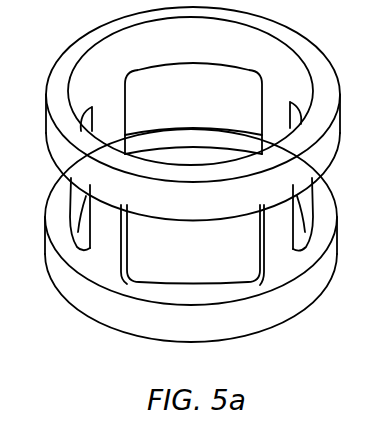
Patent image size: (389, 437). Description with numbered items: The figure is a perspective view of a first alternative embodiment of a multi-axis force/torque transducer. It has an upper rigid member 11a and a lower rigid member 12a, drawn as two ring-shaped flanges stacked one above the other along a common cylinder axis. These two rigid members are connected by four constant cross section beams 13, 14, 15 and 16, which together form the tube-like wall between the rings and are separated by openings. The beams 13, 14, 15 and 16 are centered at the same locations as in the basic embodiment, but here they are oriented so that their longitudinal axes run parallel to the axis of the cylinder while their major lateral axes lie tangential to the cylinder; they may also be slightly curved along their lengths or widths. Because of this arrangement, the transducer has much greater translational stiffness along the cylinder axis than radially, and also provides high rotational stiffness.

The upper rigid member 11a is at (120, 26).
The lower rigid member 12a is at (194, 328).
The constant cross section beam 13 is at (117, 118).
The constant cross section beam 14 is at (234, 247).
The constant cross section beam 15 is at (223, 102).
The constant cross section beam 16 is at (112, 237).